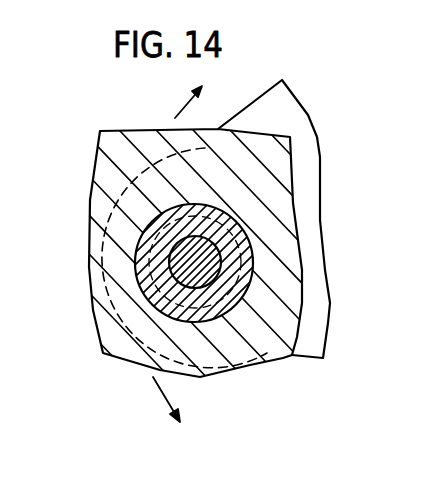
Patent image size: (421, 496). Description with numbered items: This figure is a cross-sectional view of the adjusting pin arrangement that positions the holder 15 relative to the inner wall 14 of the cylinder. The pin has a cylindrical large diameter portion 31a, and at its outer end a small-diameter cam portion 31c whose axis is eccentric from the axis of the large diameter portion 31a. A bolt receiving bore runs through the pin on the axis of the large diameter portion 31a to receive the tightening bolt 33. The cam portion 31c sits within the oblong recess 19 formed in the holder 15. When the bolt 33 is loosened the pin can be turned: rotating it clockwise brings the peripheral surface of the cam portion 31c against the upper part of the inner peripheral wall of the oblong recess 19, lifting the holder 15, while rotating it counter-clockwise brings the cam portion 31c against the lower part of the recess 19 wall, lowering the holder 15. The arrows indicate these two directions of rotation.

The inner wall 14 is at (108, 129).
The holder 15 is at (253, 99).
The oblong recess 19 is at (240, 187).
The large diameter portion 31a is at (245, 243).
The cam portion 31c is at (196, 236).
The bolt 33 is at (205, 261).